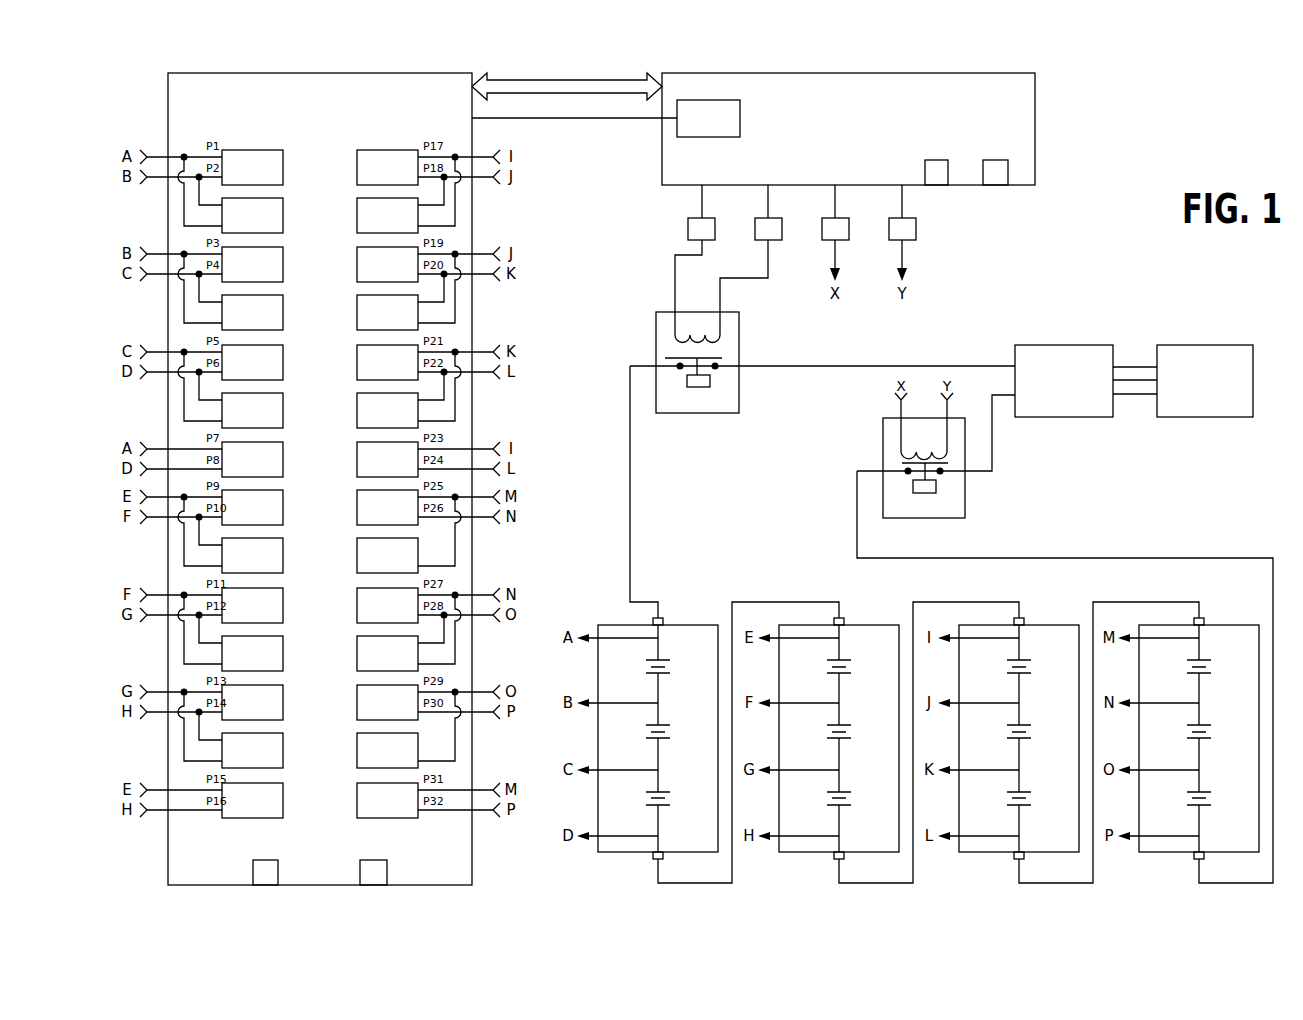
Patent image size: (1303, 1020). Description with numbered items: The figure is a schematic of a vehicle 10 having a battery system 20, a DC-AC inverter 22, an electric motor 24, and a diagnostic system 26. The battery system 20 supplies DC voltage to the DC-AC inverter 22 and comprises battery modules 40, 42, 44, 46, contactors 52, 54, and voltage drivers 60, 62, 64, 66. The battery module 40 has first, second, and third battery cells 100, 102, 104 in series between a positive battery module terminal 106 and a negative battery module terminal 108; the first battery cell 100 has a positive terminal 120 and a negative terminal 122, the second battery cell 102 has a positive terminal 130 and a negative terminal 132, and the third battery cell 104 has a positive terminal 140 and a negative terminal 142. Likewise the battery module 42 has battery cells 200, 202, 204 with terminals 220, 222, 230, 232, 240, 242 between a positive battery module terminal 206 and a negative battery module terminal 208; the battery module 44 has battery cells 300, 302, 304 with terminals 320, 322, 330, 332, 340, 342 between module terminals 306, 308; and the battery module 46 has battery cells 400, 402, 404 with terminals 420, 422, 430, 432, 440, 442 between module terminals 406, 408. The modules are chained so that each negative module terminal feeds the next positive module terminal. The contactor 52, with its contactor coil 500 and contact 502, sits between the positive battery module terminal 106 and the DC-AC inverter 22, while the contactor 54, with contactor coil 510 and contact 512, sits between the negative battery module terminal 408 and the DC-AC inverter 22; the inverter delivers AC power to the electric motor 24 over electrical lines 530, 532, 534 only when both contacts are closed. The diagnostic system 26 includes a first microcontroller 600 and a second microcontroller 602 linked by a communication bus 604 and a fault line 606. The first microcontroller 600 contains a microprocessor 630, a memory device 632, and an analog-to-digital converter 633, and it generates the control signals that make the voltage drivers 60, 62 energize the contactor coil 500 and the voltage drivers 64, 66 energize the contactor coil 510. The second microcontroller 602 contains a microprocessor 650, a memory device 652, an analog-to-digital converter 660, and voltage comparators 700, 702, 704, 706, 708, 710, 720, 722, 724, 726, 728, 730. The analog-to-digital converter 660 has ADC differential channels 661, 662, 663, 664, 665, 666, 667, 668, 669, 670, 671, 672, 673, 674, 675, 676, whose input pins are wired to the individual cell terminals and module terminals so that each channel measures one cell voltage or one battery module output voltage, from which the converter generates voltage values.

The vehicle 10 is at (1109, 190).
The battery system 20 is at (879, 354).
The DC-AC inverter 22 is at (1064, 345).
The electric motor 24 is at (1205, 345).
The diagnostic system 26 is at (660, 64).
The battery module 40 is at (701, 625).
The battery module 42 is at (882, 625).
The battery module 44 is at (1062, 625).
The battery module 46 is at (1242, 625).
The contactor 52 is at (752, 343).
The contactor 54 is at (961, 408).
The voltage driver 60 is at (715, 232).
The voltage driver 62 is at (782, 232).
The voltage driver 64 is at (849, 232).
The voltage driver 66 is at (916, 232).
The first battery cell 100 is at (675, 665).
The second battery cell 102 is at (675, 730).
The third battery cell 104 is at (675, 803).
The positive battery module terminal 106 is at (664, 616).
The negative battery module terminal 108 is at (655, 862).
The positive terminal 120 is at (664, 657).
The negative terminal 122 is at (660, 676).
The positive terminal 130 is at (664, 722).
The negative terminal 132 is at (660, 741).
The positive terminal 140 is at (664, 793).
The negative terminal 142 is at (660, 810).
The first battery cell 200 is at (856, 665).
The second battery cell 202 is at (856, 730).
The third battery cell 204 is at (856, 803).
The positive battery module terminal 206 is at (845, 616).
The negative battery module terminal 208 is at (836, 862).
The positive terminal 220 is at (845, 657).
The negative terminal 222 is at (841, 676).
The positive terminal 230 is at (845, 722).
The negative terminal 232 is at (841, 741).
The positive terminal 240 is at (845, 793).
The negative terminal 242 is at (841, 810).
The first battery cell 300 is at (1036, 665).
The second battery cell 302 is at (1036, 730).
The third battery cell 304 is at (1036, 803).
The positive battery module terminal 306 is at (1025, 616).
The negative battery module terminal 308 is at (1016, 862).
The positive terminal 320 is at (1025, 657).
The negative terminal 322 is at (1021, 676).
The positive terminal 330 is at (1025, 722).
The negative terminal 332 is at (1021, 741).
The positive terminal 340 is at (1025, 793).
The negative terminal 342 is at (1021, 810).
The first battery cell 400 is at (1216, 665).
The second battery cell 402 is at (1216, 730).
The third battery cell 404 is at (1216, 803).
The positive battery module terminal 406 is at (1205, 616).
The negative battery module terminal 408 is at (1196, 862).
The positive terminal 420 is at (1205, 657).
The negative terminal 422 is at (1201, 676).
The positive terminal 430 is at (1205, 722).
The negative terminal 432 is at (1201, 741).
The positive terminal 440 is at (1205, 793).
The negative terminal 442 is at (1201, 810).
The contactor coil 500 is at (672, 340).
The contact 502 is at (668, 357).
The contactor coil 510 is at (900, 447).
The contact 512 is at (902, 463).
The electrical line 530 is at (1134, 366).
The electrical line 532 is at (1125, 382).
The electrical line 534 is at (1143, 395).
The first microcontroller 600 is at (1035, 128).
The second microcontroller 602 is at (340, 73).
The communication bus 604 is at (565, 73).
The fault line 606 is at (542, 120).
The microprocessor 630 is at (938, 168).
The memory device 632 is at (995, 168).
The analog-to-digital converter 633 is at (708, 137).
The microprocessor 650 is at (278, 872).
The memory device 652 is at (387, 872).
The analog-to-digital converter 660 is at (245, 150).
The ADC differential channel 661 is at (283, 176).
The ADC differential channel 662 is at (283, 273).
The ADC differential channel 663 is at (283, 371).
The ADC differential channel 664 is at (283, 468).
The ADC differential channel 665 is at (283, 516).
The ADC differential channel 666 is at (283, 614).
The ADC differential channel 667 is at (283, 711).
The ADC differential channel 668 is at (283, 809).
The ADC differential channel 669 is at (357, 157).
The ADC differential channel 670 is at (357, 254).
The ADC differential channel 671 is at (357, 352).
The ADC differential channel 672 is at (357, 449).
The ADC differential channel 673 is at (357, 497).
The ADC differential channel 674 is at (357, 595).
The ADC differential channel 675 is at (357, 692).
The ADC differential channel 676 is at (357, 790).
The voltage comparator 700 is at (283, 223).
The voltage comparator 702 is at (283, 320).
The voltage comparator 704 is at (283, 418).
The voltage comparator 706 is at (283, 563).
The voltage comparator 708 is at (283, 661).
The voltage comparator 710 is at (283, 758).
The voltage comparator 720 is at (357, 205).
The voltage comparator 722 is at (357, 302).
The voltage comparator 724 is at (357, 400).
The voltage comparator 726 is at (357, 545).
The voltage comparator 728 is at (357, 643).
The voltage comparator 730 is at (357, 740).